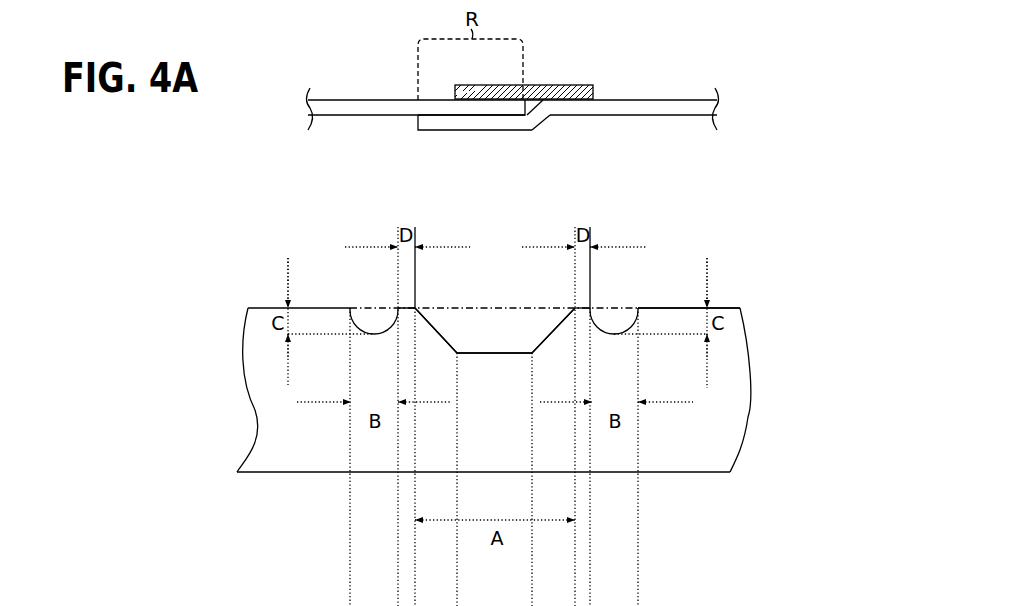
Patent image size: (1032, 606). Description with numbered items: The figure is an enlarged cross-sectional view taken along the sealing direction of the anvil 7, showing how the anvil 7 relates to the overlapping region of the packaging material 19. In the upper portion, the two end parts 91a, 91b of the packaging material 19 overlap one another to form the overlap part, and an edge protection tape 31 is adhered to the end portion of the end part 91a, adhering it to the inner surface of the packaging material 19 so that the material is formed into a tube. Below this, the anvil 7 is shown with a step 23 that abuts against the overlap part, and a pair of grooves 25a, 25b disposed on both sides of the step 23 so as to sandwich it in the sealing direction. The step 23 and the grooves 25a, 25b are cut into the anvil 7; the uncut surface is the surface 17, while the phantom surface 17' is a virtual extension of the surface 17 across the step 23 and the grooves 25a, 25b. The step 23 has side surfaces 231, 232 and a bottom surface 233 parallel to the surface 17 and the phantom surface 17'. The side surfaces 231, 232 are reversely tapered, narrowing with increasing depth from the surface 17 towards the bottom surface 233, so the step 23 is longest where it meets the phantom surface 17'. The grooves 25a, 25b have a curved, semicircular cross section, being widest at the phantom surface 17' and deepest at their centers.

The anvil 7 is at (745, 277).
The surface 17 is at (689, 255).
The phantom surface 17' is at (611, 257).
The packaging material 19 is at (662, 100).
The step 23 is at (492, 335).
The groove 25a is at (375, 318).
The groove 25b is at (618, 322).
The edge protection tape 31 is at (557, 90).
The end part 91a is at (400, 107).
The end part 91b is at (475, 123).
The side surface 231 is at (440, 333).
The side surface 232 is at (550, 332).
The bottom surface 233 is at (512, 352).